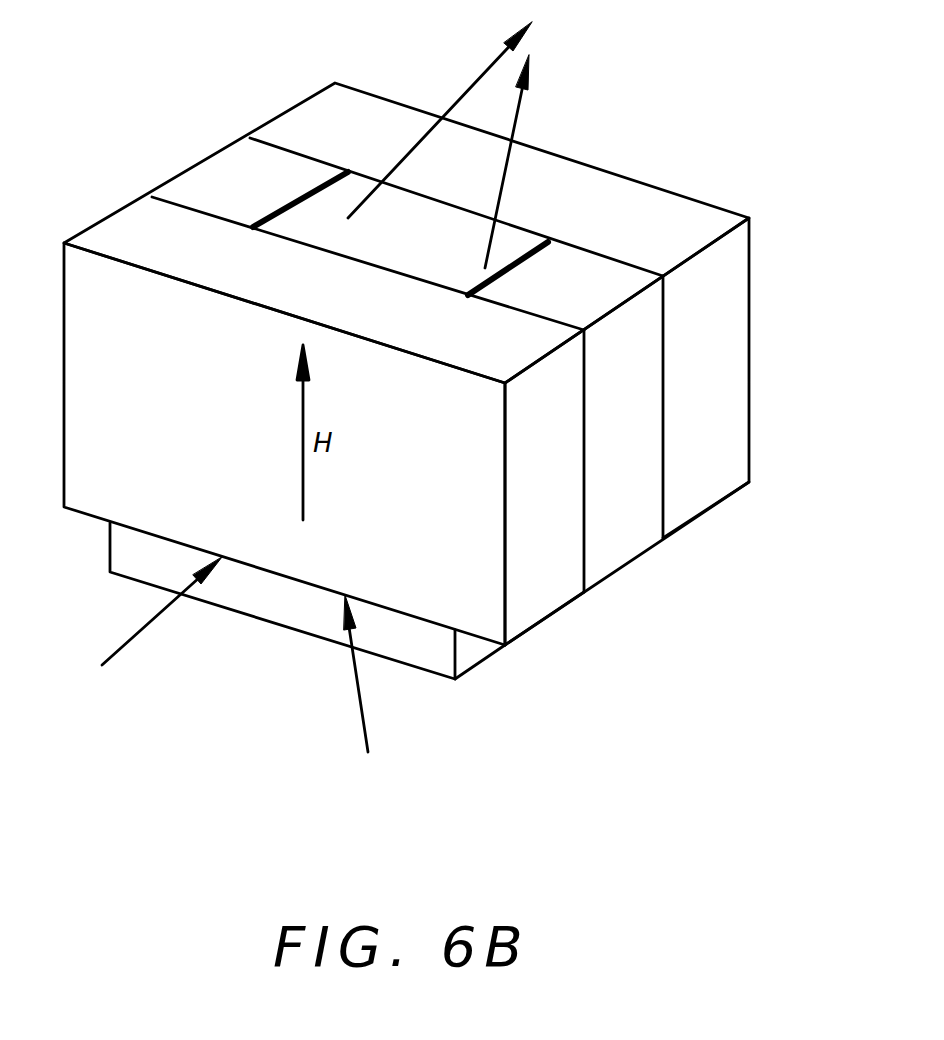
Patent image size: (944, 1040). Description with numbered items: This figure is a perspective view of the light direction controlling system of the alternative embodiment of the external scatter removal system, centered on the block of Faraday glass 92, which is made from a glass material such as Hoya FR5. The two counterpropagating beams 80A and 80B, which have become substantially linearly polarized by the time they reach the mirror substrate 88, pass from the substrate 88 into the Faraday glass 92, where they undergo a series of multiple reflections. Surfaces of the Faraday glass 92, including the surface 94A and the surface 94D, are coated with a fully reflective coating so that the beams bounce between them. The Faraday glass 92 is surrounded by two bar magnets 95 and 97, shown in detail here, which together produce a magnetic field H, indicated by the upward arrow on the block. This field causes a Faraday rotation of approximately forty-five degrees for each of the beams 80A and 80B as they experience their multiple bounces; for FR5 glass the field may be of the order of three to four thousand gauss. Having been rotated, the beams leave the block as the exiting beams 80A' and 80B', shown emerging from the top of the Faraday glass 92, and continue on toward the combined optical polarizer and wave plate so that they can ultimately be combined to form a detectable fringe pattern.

The counterpropagating beam 80A is at (399, 673).
The counterpropagating beam 80B is at (162, 626).
The exiting beam 80A' is at (440, 120).
The exiting beam 80B' is at (558, 161).
The mirror substrate 88 is at (142, 568).
The Faraday glass 92 is at (640, 540).
The surface of the Faraday glass 94A is at (607, 288).
The surface of the Faraday glass 94D is at (197, 185).
The bar magnet 95 is at (540, 603).
The bar magnet 97 is at (563, 182).